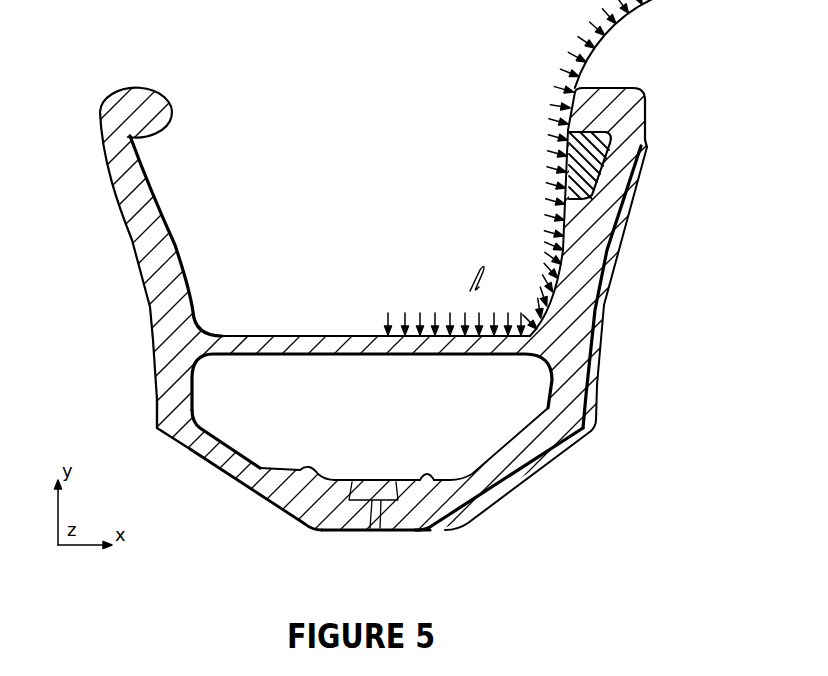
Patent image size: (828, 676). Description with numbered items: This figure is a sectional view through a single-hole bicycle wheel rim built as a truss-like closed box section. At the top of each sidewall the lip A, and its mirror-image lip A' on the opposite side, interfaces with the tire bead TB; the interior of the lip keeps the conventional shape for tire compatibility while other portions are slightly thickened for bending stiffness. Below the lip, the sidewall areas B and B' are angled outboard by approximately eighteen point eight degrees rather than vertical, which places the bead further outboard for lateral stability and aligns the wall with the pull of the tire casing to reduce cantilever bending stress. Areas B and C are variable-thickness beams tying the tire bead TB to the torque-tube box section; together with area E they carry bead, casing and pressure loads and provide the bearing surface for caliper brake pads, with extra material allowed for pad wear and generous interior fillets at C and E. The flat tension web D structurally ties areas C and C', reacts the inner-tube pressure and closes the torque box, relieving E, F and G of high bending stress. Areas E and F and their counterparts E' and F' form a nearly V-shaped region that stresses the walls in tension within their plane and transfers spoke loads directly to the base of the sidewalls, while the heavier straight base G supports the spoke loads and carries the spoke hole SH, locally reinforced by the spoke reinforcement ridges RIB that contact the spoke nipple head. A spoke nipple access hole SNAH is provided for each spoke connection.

The lip A is at (114, 112).
The right bead hook portion A' is at (632, 117).
The sidewall area B is at (176, 236).
The right sidewall portion B' is at (625, 287).
The lower sidewall area C is at (128, 256).
The opposite lower sidewall area C' is at (618, 345).
The tension web D is at (512, 358).
The corner area E is at (160, 423).
The opposite corner area E' is at (589, 423).
The slanted base wall F is at (256, 491).
The opposite slanted base wall F' is at (503, 480).
The base G is at (450, 535).
The tire bead TB is at (557, 170).
The spoke nipple access hole SNAH is at (363, 334).
The rib RIB is at (311, 467).
The spoke hole SH is at (380, 482).